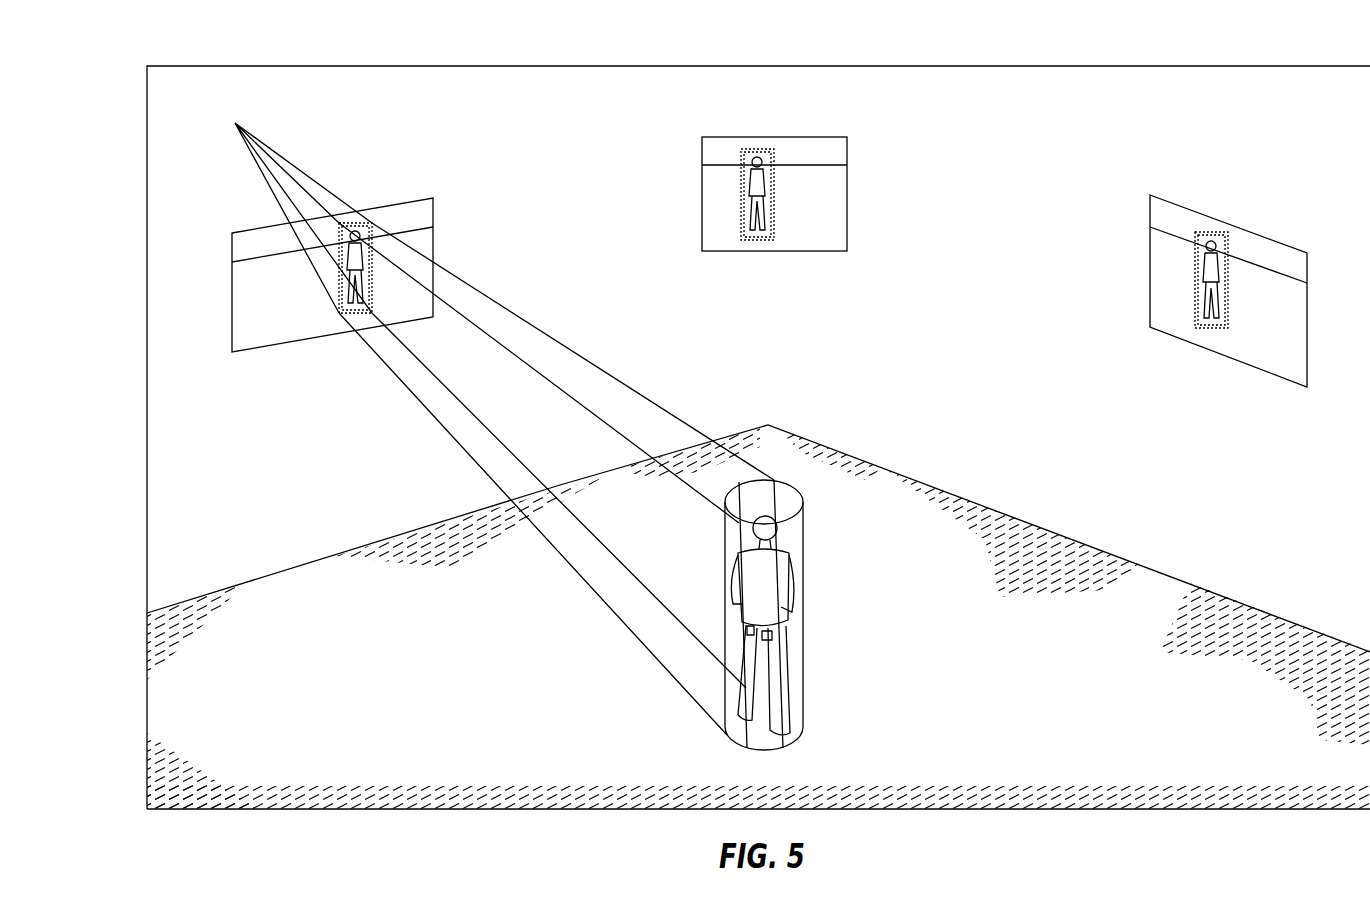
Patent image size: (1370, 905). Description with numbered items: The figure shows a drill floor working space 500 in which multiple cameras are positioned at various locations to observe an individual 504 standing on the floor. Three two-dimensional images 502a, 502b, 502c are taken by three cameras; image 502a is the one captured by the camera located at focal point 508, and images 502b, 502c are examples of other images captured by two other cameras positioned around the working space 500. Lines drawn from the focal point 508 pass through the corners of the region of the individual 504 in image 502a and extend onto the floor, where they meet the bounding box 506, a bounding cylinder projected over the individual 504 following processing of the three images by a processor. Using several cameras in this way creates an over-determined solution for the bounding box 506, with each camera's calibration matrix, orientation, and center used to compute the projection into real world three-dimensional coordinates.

The drill floor working space 500 is at (243, 43).
The two-dimensional image 502a is at (408, 200).
The two-dimensional image 502b is at (718, 136).
The two-dimensional image 502c is at (1168, 200).
The individual 504 is at (775, 590).
The bounding box 506 is at (758, 478).
The focal point 508 is at (234, 122).